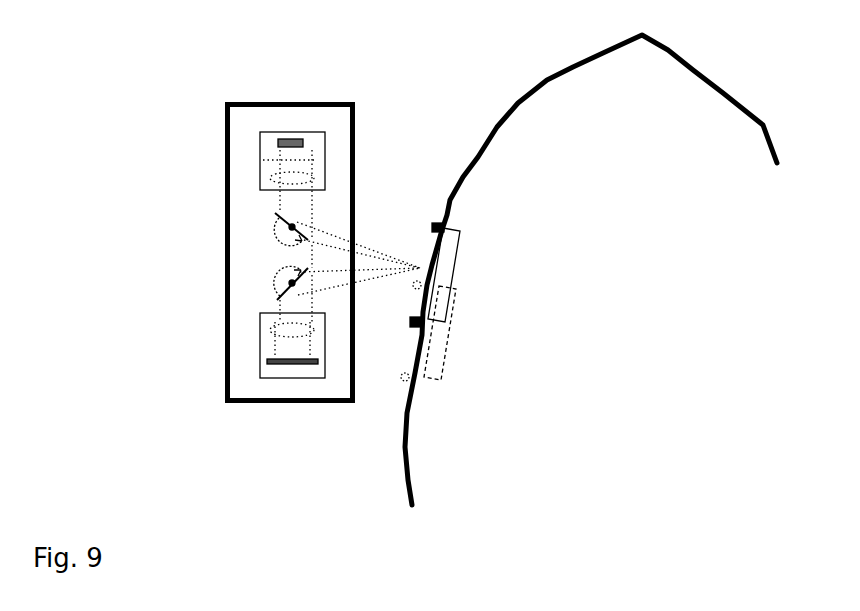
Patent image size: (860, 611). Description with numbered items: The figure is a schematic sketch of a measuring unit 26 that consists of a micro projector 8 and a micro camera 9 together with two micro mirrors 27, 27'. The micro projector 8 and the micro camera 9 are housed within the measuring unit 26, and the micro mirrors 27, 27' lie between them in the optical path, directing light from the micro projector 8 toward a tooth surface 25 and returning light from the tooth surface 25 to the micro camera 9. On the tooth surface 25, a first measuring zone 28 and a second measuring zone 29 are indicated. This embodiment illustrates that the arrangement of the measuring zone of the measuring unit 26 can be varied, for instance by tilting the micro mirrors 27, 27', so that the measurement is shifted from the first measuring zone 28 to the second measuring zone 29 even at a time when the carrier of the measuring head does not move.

The micro projector 8 is at (265, 143).
The micro camera 9 is at (263, 367).
The tooth surface 25 is at (548, 77).
The measuring unit 26 is at (255, 107).
The micro mirror 27 is at (268, 240).
The micro mirror 27' is at (267, 283).
The first measuring zone 28 is at (461, 261).
The second measuring zone 29 is at (446, 373).